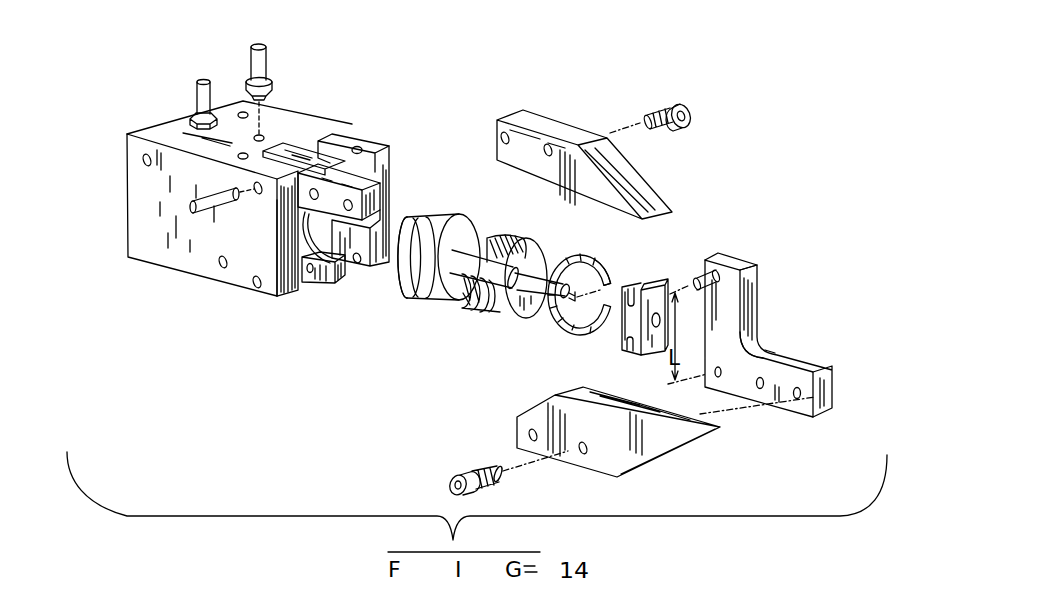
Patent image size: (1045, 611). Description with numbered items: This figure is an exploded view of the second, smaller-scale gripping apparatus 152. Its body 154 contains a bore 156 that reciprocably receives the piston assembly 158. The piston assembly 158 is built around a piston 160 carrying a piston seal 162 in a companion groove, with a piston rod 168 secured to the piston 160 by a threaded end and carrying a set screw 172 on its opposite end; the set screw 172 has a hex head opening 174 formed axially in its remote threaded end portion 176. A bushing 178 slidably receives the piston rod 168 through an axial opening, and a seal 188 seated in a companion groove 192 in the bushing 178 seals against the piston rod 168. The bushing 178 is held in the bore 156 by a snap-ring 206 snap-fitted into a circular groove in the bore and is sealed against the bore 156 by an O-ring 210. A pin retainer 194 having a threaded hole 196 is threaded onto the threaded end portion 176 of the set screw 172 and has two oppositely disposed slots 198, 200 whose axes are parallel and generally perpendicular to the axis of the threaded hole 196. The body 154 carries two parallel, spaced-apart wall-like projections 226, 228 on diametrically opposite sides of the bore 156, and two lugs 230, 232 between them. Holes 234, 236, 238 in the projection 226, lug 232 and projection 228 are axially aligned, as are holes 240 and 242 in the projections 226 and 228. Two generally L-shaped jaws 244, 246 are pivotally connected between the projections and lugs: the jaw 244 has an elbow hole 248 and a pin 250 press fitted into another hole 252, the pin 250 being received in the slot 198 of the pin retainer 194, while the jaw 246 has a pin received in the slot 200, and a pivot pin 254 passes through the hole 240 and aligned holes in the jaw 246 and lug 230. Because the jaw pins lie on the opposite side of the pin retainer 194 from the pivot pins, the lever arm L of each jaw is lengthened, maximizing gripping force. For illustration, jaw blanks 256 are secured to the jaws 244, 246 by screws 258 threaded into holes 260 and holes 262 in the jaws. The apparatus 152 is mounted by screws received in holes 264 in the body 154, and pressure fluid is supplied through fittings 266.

The gripping apparatus 152 is at (460, 62).
The body 154 is at (140, 218).
The bore 156 is at (293, 292).
The piston assembly 158 is at (447, 350).
The piston 160 is at (472, 232).
The piston seal 162 is at (452, 216).
The piston rod 168 is at (472, 290).
The set screw 172 is at (566, 284).
The hex head opening 174 is at (600, 280).
The remote threaded end portion 176 is at (557, 313).
The bushing 178 is at (477, 314).
The seal 188 is at (522, 248).
The companion groove 192 is at (526, 267).
The pin retainer 194 is at (660, 346).
The threaded hole 196 is at (685, 333).
The slot 198 is at (700, 272).
The slot 200 is at (632, 340).
The snap-ring 206 is at (608, 274).
The O-ring 210 is at (473, 310).
The wall-like projection 226 is at (278, 228).
The wall-like projection 228 is at (382, 156).
The lug 230 is at (322, 150).
The lug 232 is at (336, 284).
The hole 234 is at (256, 287).
The hole 236 is at (310, 273).
The hole 238 is at (358, 263).
The hole 240 is at (253, 186).
The hole 242 is at (356, 147).
The jaw 244 is at (793, 314).
The jaw 246 is at (385, 193).
The elbow hole 248 is at (752, 355).
The pin 250 is at (712, 262).
The hole 252 is at (728, 282).
The pivot pin 254 is at (205, 213).
The jaw blank 256 is at (632, 162).
The screw 258 is at (449, 478).
The hole 260 is at (529, 434).
The hole 262 is at (798, 387).
The hole 264 is at (143, 165).
The fitting 266 is at (252, 62).